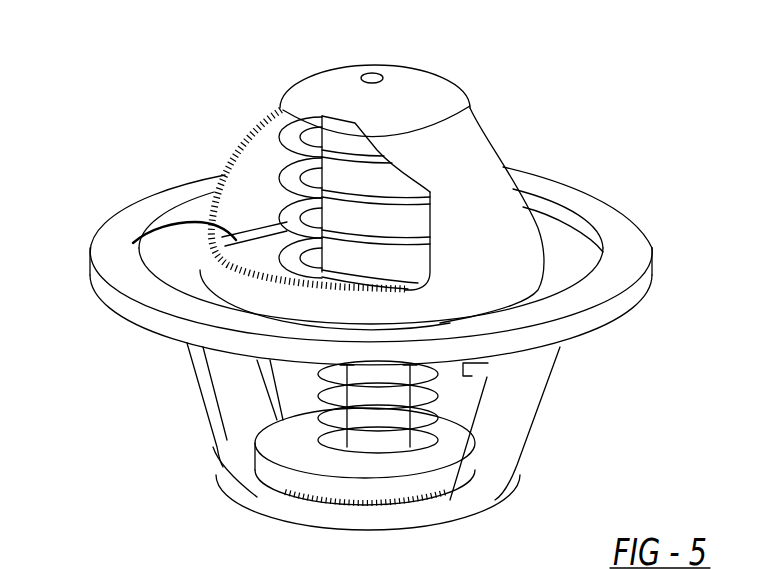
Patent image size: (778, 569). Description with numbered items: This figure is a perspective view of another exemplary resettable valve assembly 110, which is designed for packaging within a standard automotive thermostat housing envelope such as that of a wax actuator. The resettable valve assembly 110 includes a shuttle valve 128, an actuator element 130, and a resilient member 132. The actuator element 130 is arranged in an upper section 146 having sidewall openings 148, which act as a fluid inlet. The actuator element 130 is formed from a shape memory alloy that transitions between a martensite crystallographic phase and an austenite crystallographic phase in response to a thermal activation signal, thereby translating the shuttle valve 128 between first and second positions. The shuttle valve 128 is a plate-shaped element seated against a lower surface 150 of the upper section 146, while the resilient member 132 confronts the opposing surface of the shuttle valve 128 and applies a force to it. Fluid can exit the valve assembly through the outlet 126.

The resettable valve assembly 110 is at (156, 79).
The outlet 126 is at (233, 383).
The shuttle valve 128 is at (257, 252).
The actuator element 130 is at (288, 122).
The resilient member 132 is at (460, 393).
The upper section 146 is at (461, 160).
The sidewall openings 148 is at (273, 160).
The lower surface 150 is at (137, 242).